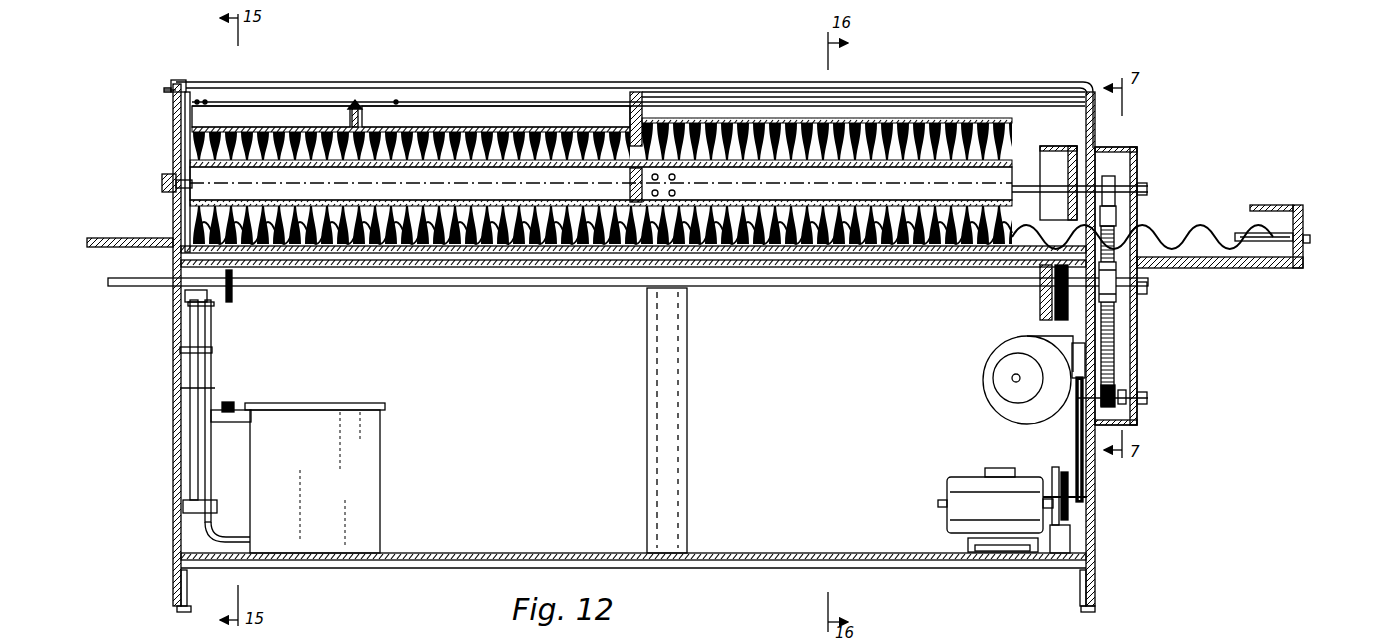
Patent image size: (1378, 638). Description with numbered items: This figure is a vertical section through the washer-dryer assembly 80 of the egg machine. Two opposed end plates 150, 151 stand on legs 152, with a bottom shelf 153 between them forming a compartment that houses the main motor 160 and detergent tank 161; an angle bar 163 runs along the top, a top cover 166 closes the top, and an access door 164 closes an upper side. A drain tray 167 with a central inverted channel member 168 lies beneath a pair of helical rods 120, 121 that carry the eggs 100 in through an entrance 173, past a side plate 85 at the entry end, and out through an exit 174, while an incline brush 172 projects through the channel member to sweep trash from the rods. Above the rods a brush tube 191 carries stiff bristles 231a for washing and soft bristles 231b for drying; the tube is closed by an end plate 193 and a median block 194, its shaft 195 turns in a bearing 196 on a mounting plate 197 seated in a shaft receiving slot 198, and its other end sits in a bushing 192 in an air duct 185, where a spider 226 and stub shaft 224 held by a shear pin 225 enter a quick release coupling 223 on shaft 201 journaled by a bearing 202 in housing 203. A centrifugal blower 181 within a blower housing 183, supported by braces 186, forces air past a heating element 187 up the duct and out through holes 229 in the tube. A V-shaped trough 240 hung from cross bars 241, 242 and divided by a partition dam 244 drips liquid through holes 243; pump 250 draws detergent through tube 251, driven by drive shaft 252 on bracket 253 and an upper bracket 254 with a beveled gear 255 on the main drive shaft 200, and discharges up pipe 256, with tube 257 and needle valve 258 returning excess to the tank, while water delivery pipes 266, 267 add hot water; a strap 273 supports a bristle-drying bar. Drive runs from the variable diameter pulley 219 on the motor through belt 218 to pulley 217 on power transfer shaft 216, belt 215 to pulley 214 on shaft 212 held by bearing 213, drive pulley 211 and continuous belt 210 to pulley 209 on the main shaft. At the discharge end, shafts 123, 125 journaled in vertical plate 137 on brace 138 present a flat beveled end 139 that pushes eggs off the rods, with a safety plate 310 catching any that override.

The washer-dryer assembly 80 is at (540, 130).
The side plate 85 is at (106, 244).
The eggs 100 is at (1186, 235).
The helical rod 120 is at (482, 200).
The helical rod 121 is at (405, 200).
The shaft 123 is at (1306, 236).
The shaft 125 is at (1270, 236).
The vertical plate 137 is at (1304, 232).
The brace 138 is at (1284, 268).
The flat beveled end 139 is at (1225, 268).
The end plate 150 is at (175, 383).
The end plate 151 is at (1095, 530).
The legs 152 is at (176, 596).
The bottom shelf 153 is at (712, 558).
The main motor 160 is at (950, 490).
The detergent tank 161 is at (380, 492).
The angle bar 163 is at (780, 120).
The access door 164 is at (462, 254).
The top cover 166 is at (885, 118).
The drain tray 167 is at (390, 268).
The inverted channel member 168 is at (540, 254).
The incline brush 172 is at (625, 262).
The entrance 173 is at (176, 232).
The exit 174 is at (1115, 196).
The centrifugal air blower 181 is at (989, 378).
The blower housing 183 is at (1005, 340).
The air duct 185 is at (1045, 272).
The braces 186 is at (1114, 350).
The heating element 187 is at (1056, 290).
The brush tube 191 is at (792, 200).
The bushing 192 is at (1050, 140).
The end plate 193 is at (192, 162).
The median block 194 is at (640, 188).
The shaft 195 is at (162, 186).
The bearing 196 is at (164, 176).
The mounting plate 197 is at (176, 135).
The shaft receiving slot 198 is at (178, 106).
The main drive shaft 200 is at (746, 287).
The shaft 201 is at (1137, 176).
The bearing 202 is at (1147, 190).
The housing 203 is at (1128, 342).
The pulley 209 is at (1147, 292).
The continuous belt 210 is at (1118, 226).
The drive pulley 211 is at (1116, 405).
The shaft 212 is at (1148, 398).
The bearing 213 is at (1128, 393).
The pulley 214 is at (1077, 420).
The continuous belt 215 is at (1074, 366).
The power transfer shaft 216 is at (1076, 497).
The pulley 217 is at (1068, 480).
The belt 218 is at (1056, 468).
The variable diameter pulley 219 is at (1046, 503).
The quick release coupling 223 is at (1080, 143).
The stub shaft 224 is at (945, 199).
The shear pin 225 is at (1140, 145).
The spider 226 is at (1000, 186).
The holes 229 is at (720, 200).
The bristles 231a is at (470, 127).
The bristles 231b is at (945, 122).
The trough 240 is at (430, 104).
The cross bar 241 is at (634, 100).
The cross bar 242 is at (178, 85).
The holes 243 is at (240, 126).
The partition dam 244 is at (360, 116).
The positive displacement pump 250 is at (217, 507).
The tube 251 is at (238, 540).
The drive shaft 252 is at (190, 432).
The bracket 253 is at (196, 305).
The bracket 254 is at (185, 297).
The beveled gear 255 is at (229, 302).
The pipe 256 is at (212, 450).
The tube 257 is at (228, 405).
The needle valve 258 is at (251, 416).
The water delivery pipe 266 is at (210, 101).
The water delivery pipe 267 is at (396, 100).
The strap 273 is at (680, 82).
The safety plate 310 is at (1262, 206).